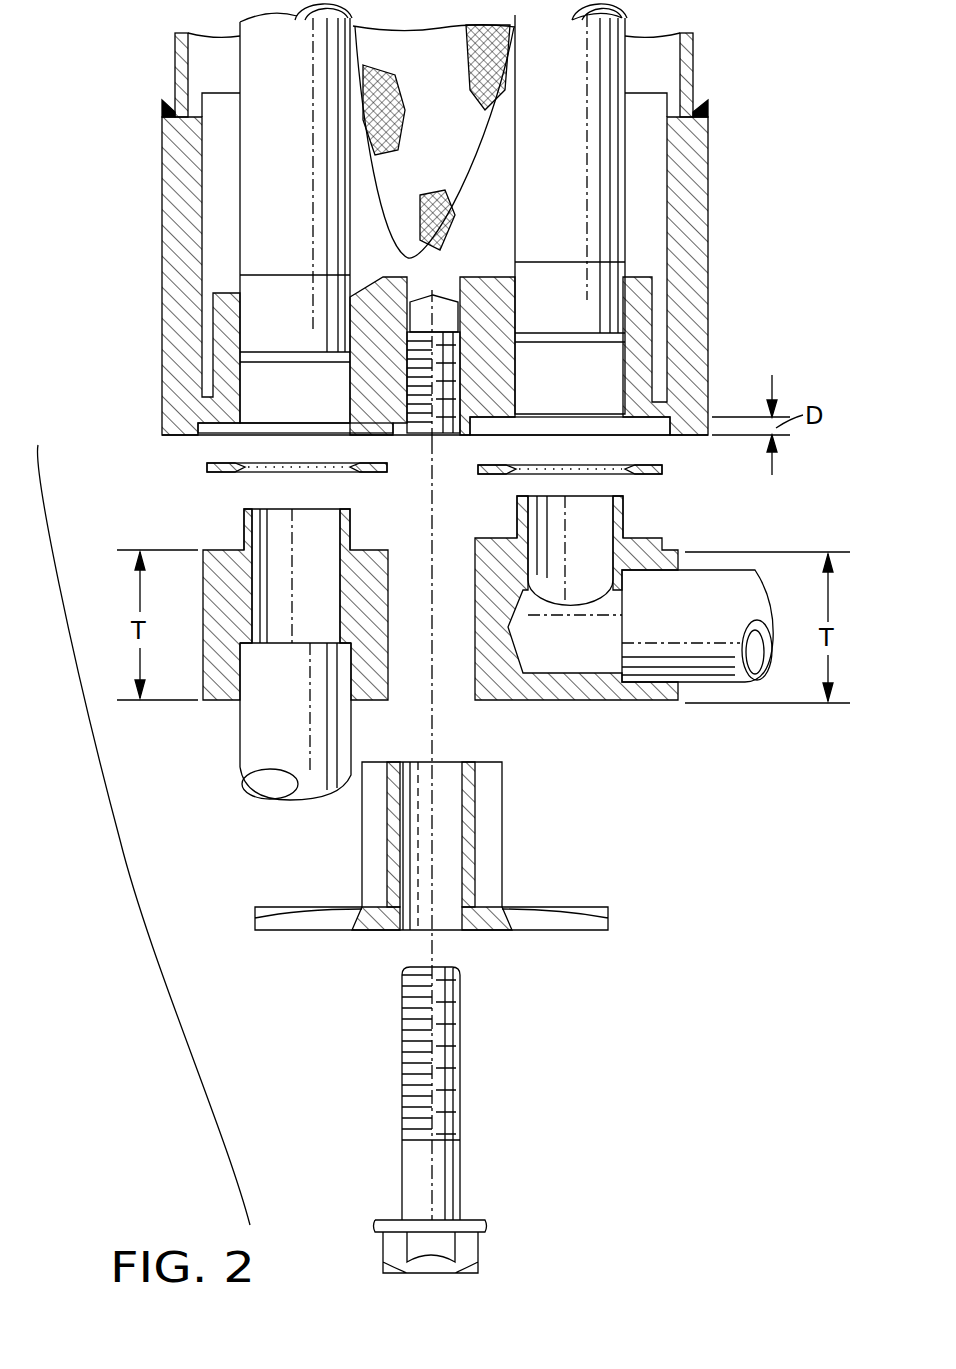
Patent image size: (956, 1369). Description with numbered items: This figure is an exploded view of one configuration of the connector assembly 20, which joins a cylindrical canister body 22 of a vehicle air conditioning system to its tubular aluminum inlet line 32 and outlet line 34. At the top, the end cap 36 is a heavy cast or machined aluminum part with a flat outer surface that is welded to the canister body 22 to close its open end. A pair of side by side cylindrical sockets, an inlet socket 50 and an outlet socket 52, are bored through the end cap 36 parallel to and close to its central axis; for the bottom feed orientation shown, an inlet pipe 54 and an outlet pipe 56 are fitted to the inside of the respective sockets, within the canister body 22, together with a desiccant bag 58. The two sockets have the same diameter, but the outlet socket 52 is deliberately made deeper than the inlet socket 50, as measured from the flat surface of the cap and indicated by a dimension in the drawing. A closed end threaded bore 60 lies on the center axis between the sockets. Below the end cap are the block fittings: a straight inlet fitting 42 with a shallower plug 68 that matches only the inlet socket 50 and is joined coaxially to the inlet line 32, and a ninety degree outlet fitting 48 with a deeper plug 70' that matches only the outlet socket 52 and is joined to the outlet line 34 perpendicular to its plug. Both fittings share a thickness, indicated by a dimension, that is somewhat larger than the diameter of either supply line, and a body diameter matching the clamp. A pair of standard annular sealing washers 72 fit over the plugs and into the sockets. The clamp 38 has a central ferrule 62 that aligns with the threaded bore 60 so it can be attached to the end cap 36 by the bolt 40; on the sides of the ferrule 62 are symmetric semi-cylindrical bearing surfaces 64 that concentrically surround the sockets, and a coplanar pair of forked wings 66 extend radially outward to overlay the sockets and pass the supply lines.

The connector assembly 20 is at (106, 842).
The canister body 22 is at (688, 68).
The inlet line 32 is at (252, 800).
The outlet line 34 is at (697, 680).
The end cap 36 is at (160, 352).
The clamp 38 is at (414, 862).
The bolt 40 is at (450, 1180).
The straight inlet block fitting 42 is at (274, 643).
The ninety degree outlet block fitting 48 is at (611, 640).
The inlet socket 50 is at (258, 435).
The outlet socket 52 is at (630, 437).
The inlet pipe 54 is at (253, 198).
The outlet pipe 56 is at (620, 205).
The desiccant bag 58 is at (420, 247).
The threaded bore 60 is at (452, 410).
The ferrule 62 is at (421, 824).
The bearing surfaces 64 is at (367, 848).
The wings 66 is at (268, 925).
The plug 68 is at (347, 530).
The plug 70' is at (632, 538).
The annular sealing washers 72 is at (207, 466).